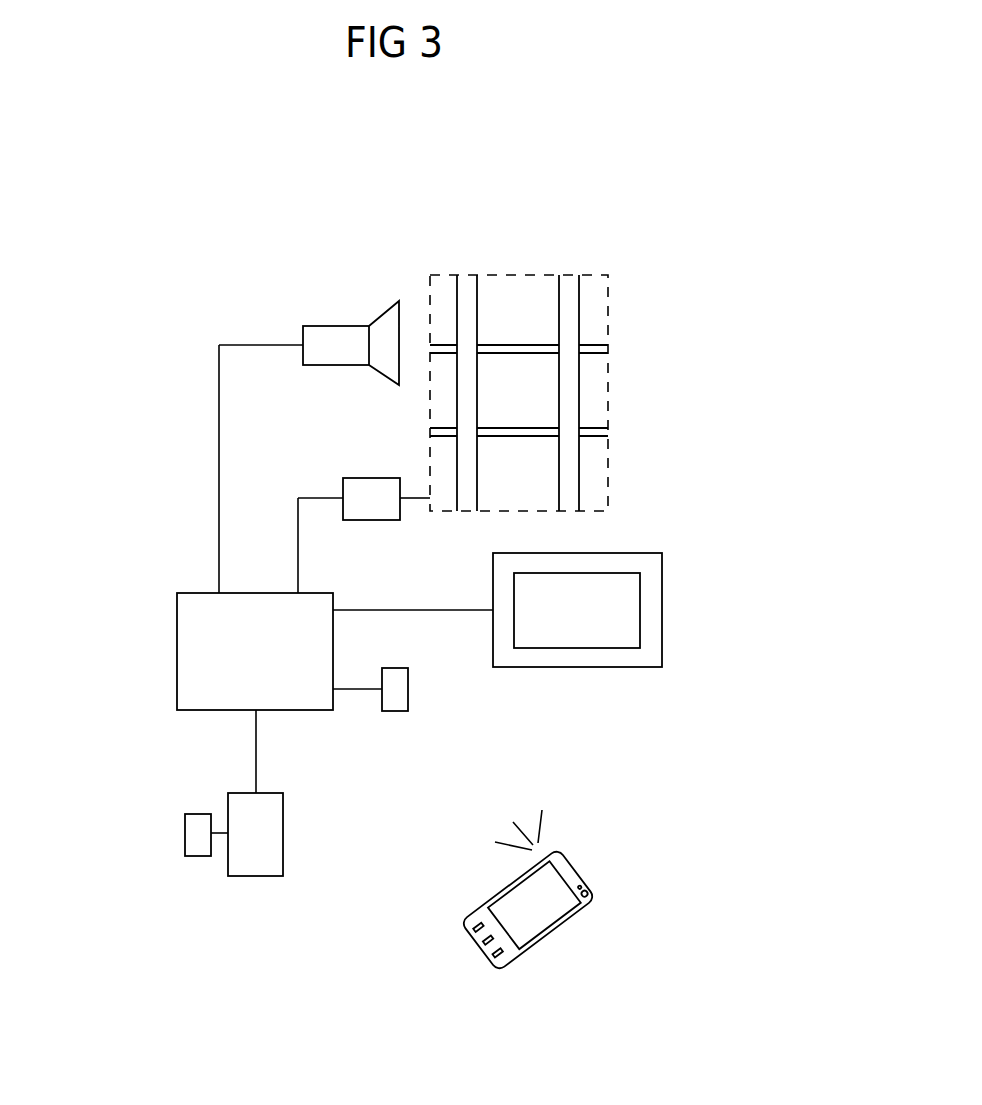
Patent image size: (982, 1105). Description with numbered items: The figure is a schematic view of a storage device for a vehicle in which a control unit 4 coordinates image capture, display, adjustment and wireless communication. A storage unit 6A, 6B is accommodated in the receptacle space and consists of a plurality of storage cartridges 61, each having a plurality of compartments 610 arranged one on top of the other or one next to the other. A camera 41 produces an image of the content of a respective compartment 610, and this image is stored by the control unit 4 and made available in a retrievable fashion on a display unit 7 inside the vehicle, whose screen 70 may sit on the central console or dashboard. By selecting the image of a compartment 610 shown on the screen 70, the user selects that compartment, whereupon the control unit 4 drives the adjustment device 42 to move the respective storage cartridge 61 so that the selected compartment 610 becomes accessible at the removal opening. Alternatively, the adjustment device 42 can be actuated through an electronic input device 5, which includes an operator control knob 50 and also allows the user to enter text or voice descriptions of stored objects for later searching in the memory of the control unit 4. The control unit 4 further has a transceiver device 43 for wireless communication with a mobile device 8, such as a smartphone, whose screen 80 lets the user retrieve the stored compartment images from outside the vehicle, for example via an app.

The control unit 4 is at (258, 665).
The camera 41 is at (327, 340).
The adjustment device 42 is at (365, 502).
The transceiver device 43 is at (399, 693).
The input device 5 is at (258, 863).
The operator control knob 50 is at (195, 833).
The storage unit 6A is at (490, 342).
The storage unit 6B is at (490, 342).
The storage cartridge 61 is at (470, 285).
The compartment 610 is at (442, 370).
The display unit 7 is at (625, 603).
The screen 70 is at (602, 633).
The mobile device 8 is at (555, 923).
The screen 80 is at (542, 913).